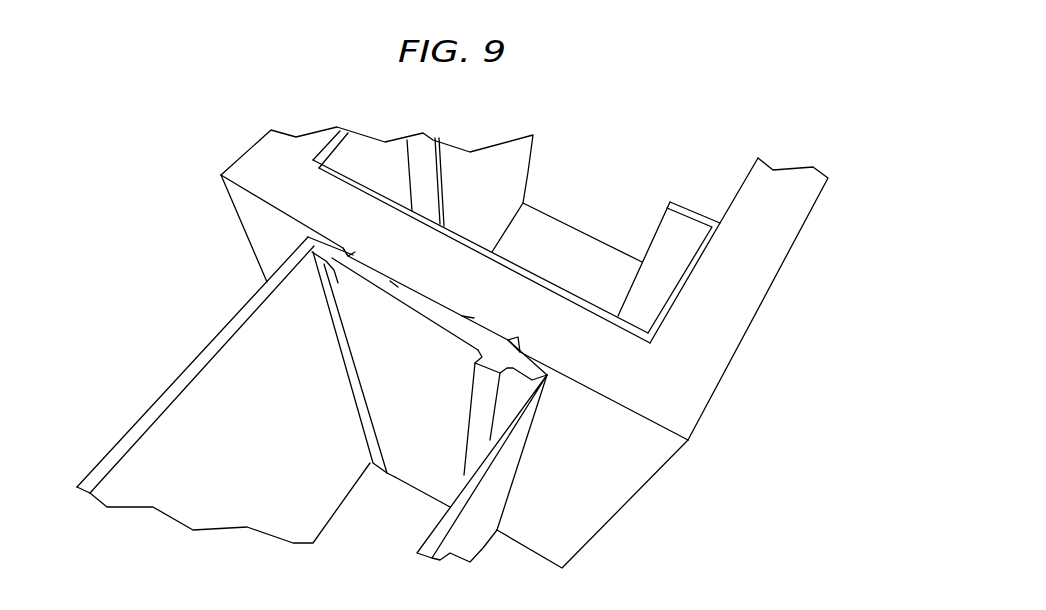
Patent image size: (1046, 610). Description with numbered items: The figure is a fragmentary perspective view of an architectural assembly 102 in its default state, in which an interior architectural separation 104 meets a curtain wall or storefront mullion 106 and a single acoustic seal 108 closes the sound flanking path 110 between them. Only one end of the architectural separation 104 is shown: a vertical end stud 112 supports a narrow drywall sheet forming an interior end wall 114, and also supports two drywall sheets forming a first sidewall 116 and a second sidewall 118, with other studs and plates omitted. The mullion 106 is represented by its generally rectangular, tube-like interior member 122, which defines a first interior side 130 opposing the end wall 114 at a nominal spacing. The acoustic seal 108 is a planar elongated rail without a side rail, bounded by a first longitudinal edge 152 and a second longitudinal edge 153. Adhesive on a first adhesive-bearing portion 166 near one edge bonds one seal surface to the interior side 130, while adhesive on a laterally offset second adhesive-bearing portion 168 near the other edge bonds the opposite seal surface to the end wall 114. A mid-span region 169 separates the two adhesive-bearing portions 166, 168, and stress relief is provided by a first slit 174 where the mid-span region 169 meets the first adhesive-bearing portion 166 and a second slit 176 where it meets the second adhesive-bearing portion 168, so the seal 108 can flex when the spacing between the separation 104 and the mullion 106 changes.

The architectural assembly 102 is at (160, 225).
The interior architectural separation 104 is at (327, 105).
The curtain wall or storefront mullion 106 is at (128, 390).
The acoustic seal 108 is at (327, 272).
The sound flanking path 110 is at (586, 416).
The vertical end stud 112 is at (667, 231).
The interior end wall 114 is at (627, 368).
The first sidewall 116 is at (806, 200).
The second sidewall 118 is at (264, 152).
The interior member 122 is at (477, 547).
The first interior side 130 is at (375, 310).
The first longitudinal edge 152 is at (520, 350).
The second longitudinal edge 153 is at (344, 247).
The first adhesive-bearing portion 166 is at (508, 336).
The second adhesive-bearing portion 168 is at (363, 257).
The mid-span region 169 is at (441, 312).
The first slit 174 is at (468, 316).
The second slit 176 is at (398, 286).